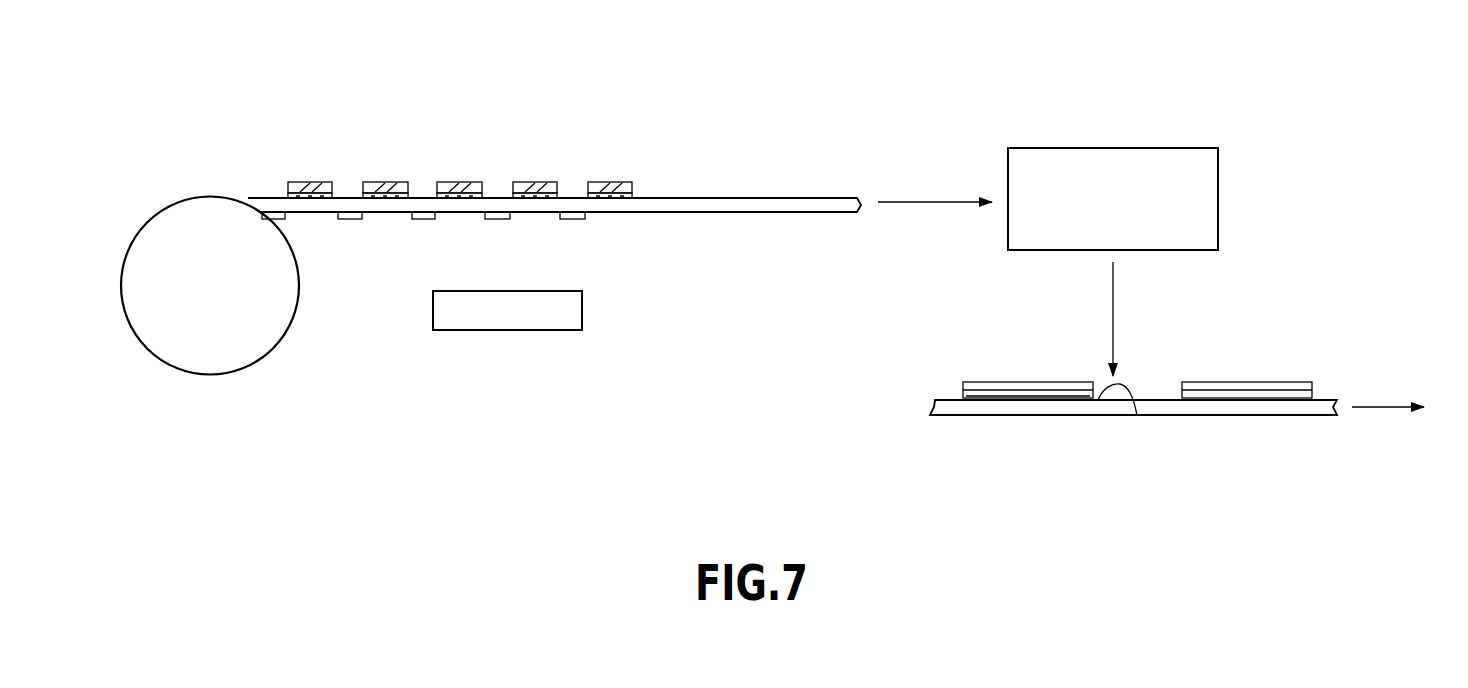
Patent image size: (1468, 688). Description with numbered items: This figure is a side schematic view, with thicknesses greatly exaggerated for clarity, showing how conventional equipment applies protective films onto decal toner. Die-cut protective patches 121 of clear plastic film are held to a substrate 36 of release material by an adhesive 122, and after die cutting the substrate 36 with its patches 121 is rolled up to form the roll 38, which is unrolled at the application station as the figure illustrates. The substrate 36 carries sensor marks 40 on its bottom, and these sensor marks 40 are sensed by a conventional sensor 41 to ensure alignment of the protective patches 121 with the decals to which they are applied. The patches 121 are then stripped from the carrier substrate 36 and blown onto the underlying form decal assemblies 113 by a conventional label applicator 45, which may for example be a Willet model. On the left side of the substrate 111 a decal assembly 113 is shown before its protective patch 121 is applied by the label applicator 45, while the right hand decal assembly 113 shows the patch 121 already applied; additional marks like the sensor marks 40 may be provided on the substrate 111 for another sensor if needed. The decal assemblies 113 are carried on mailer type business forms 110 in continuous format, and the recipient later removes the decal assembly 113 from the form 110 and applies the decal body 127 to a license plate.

The substrate 36 is at (497, 217).
The roll 38 is at (277, 343).
The sensor marks 40 is at (418, 221).
The sensor 41 is at (577, 317).
The label applicator 45 is at (1110, 147).
The business forms 110 is at (1340, 435).
The substrate 111 is at (1137, 415).
The decal assembly 113 is at (1004, 369).
The protective patch 121 is at (556, 167).
The adhesive 122 is at (350, 195).
The decal body 127 is at (972, 393).